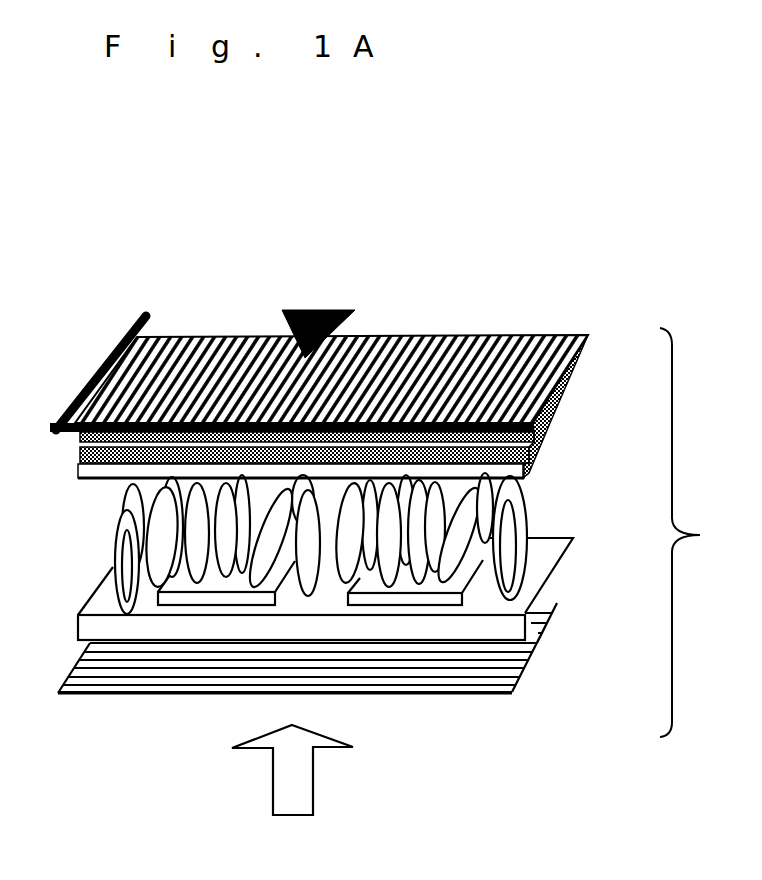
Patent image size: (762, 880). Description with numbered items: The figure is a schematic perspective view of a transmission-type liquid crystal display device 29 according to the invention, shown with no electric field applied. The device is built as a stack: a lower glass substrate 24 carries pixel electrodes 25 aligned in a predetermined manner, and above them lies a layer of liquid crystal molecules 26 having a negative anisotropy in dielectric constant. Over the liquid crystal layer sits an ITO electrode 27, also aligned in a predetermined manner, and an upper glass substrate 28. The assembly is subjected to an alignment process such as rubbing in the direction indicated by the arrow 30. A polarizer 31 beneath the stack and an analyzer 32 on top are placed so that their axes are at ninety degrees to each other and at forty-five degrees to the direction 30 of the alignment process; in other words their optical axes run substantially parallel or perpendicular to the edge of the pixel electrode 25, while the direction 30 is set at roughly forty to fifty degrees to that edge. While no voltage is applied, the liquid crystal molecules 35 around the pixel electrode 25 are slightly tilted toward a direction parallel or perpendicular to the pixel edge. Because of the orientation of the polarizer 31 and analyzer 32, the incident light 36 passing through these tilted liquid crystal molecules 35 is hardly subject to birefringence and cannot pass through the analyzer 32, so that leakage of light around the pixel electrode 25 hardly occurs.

The glass substrate 24 is at (541, 560).
The pixel electrodes 25 is at (427, 587).
The liquid crystal molecules 26 is at (527, 512).
The ITO electrode 27 is at (533, 460).
The glass substrate 28 is at (545, 412).
The liquid crystal display device 29 is at (706, 532).
The direction of alignment process 30 is at (340, 312).
The polarizer 31 is at (523, 645).
The analyzer 32 is at (513, 343).
The liquid crystal molecules around the pixel electrode 35 is at (285, 537).
The incident light 36 is at (303, 772).